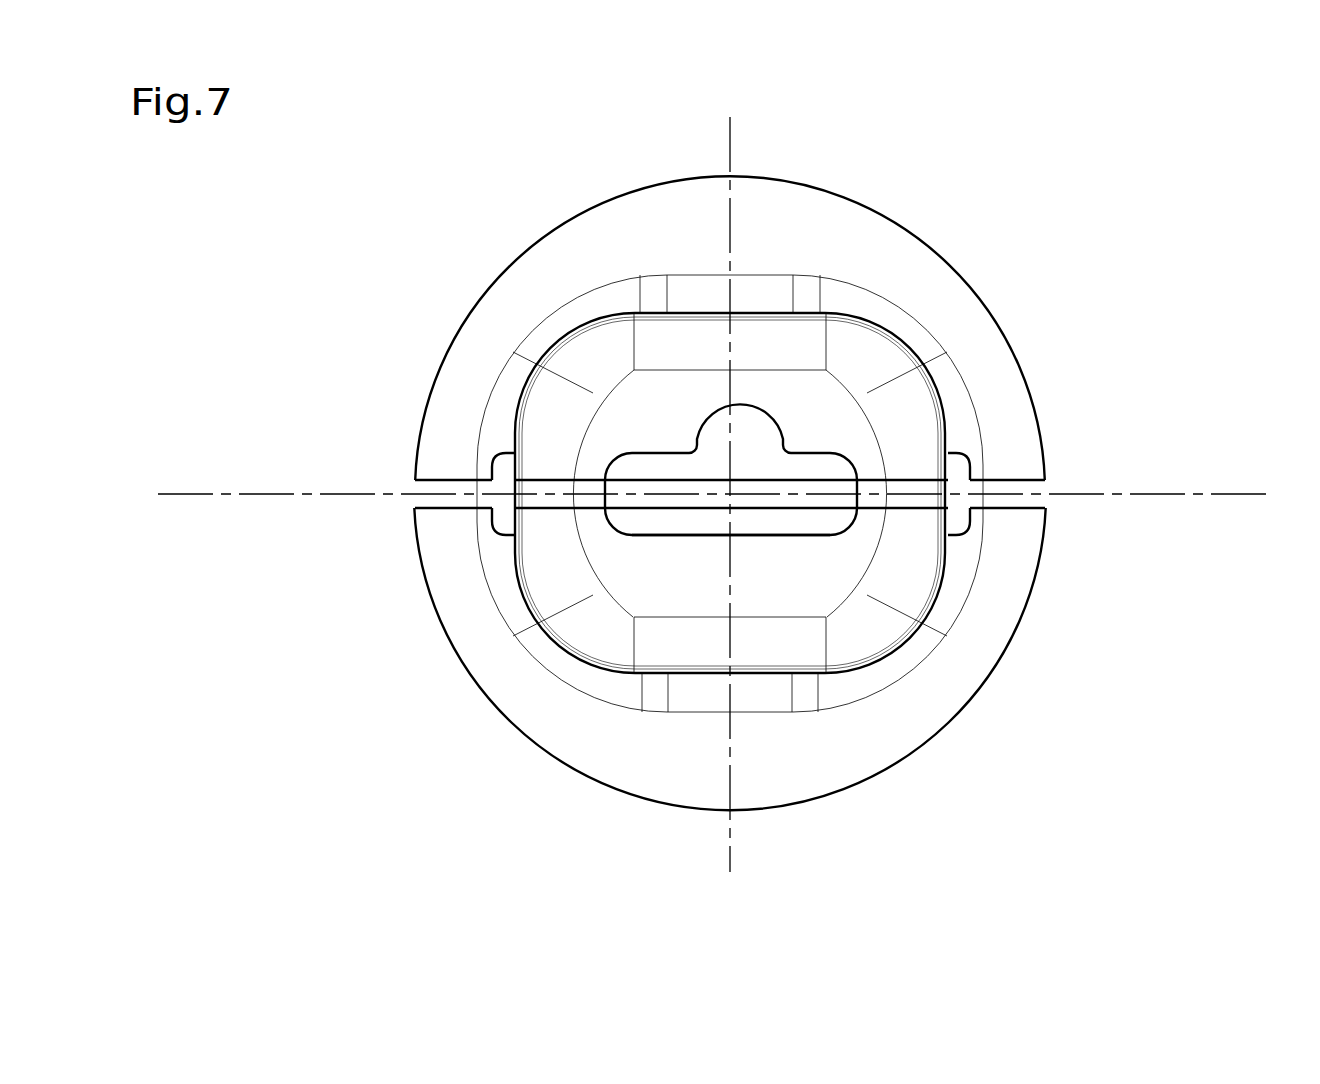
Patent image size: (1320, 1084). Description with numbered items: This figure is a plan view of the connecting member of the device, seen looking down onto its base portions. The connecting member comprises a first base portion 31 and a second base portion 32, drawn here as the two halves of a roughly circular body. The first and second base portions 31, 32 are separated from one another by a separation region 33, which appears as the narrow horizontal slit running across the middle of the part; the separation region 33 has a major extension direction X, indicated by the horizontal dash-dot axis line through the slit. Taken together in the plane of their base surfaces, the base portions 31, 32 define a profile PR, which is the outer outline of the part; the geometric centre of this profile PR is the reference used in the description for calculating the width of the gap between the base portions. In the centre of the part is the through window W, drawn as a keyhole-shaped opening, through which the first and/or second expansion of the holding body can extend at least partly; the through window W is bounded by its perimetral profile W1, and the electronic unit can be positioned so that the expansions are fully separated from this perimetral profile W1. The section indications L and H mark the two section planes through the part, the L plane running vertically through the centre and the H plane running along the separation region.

The first base portion 31 is at (820, 232).
The second base portion 32 is at (913, 715).
The separation region 33 is at (1032, 487).
The profile PR is at (774, 474).
The through window W is at (657, 453).
The perimetral profile W1 is at (672, 533).
The major extension direction X is at (223, 493).
The section line L- L is at (730, 852).
The section line H- H is at (1228, 494).